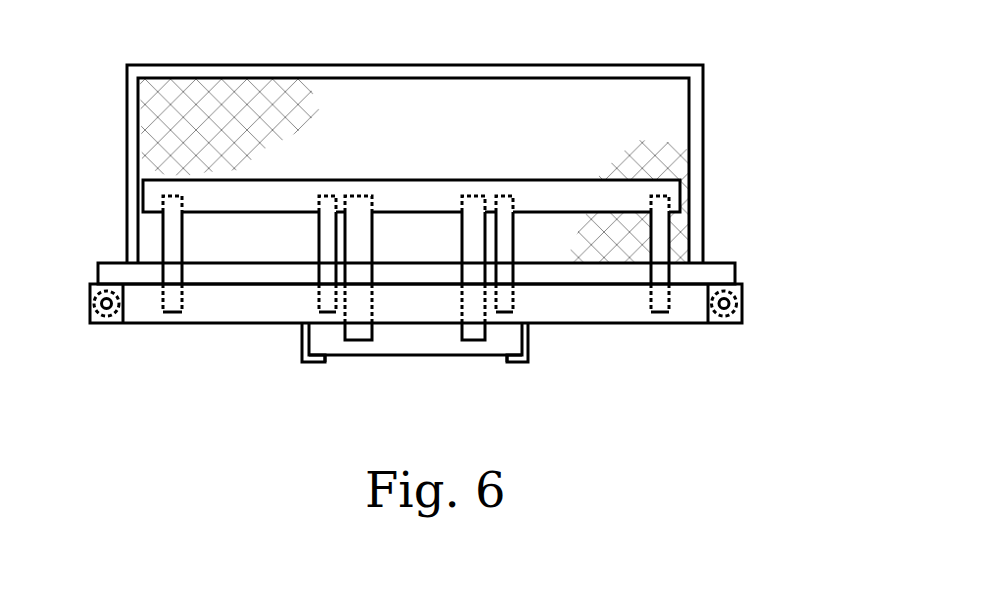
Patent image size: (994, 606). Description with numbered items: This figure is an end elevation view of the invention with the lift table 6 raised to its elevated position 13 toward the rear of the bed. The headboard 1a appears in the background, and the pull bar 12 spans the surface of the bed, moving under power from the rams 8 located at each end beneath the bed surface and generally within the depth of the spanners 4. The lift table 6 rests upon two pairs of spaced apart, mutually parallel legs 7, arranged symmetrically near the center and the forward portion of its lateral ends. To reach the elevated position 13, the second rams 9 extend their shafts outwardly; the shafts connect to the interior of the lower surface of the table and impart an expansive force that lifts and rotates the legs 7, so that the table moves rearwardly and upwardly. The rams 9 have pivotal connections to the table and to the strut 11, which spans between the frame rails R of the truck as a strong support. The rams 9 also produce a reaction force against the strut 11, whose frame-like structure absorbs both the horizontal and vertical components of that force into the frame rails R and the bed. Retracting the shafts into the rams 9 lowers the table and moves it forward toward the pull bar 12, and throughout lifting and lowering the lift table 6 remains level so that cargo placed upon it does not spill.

The headboard 1a is at (557, 102).
The elevated position 13 is at (108, 189).
The lift table 6 is at (637, 202).
The legs 7 is at (172, 272).
The second rams 9 is at (370, 340).
The pull bar 12 is at (717, 273).
The spanners 4 is at (213, 323).
The rams 8 is at (733, 307).
The strut 11 is at (313, 360).
The frame rails R is at (325, 343).